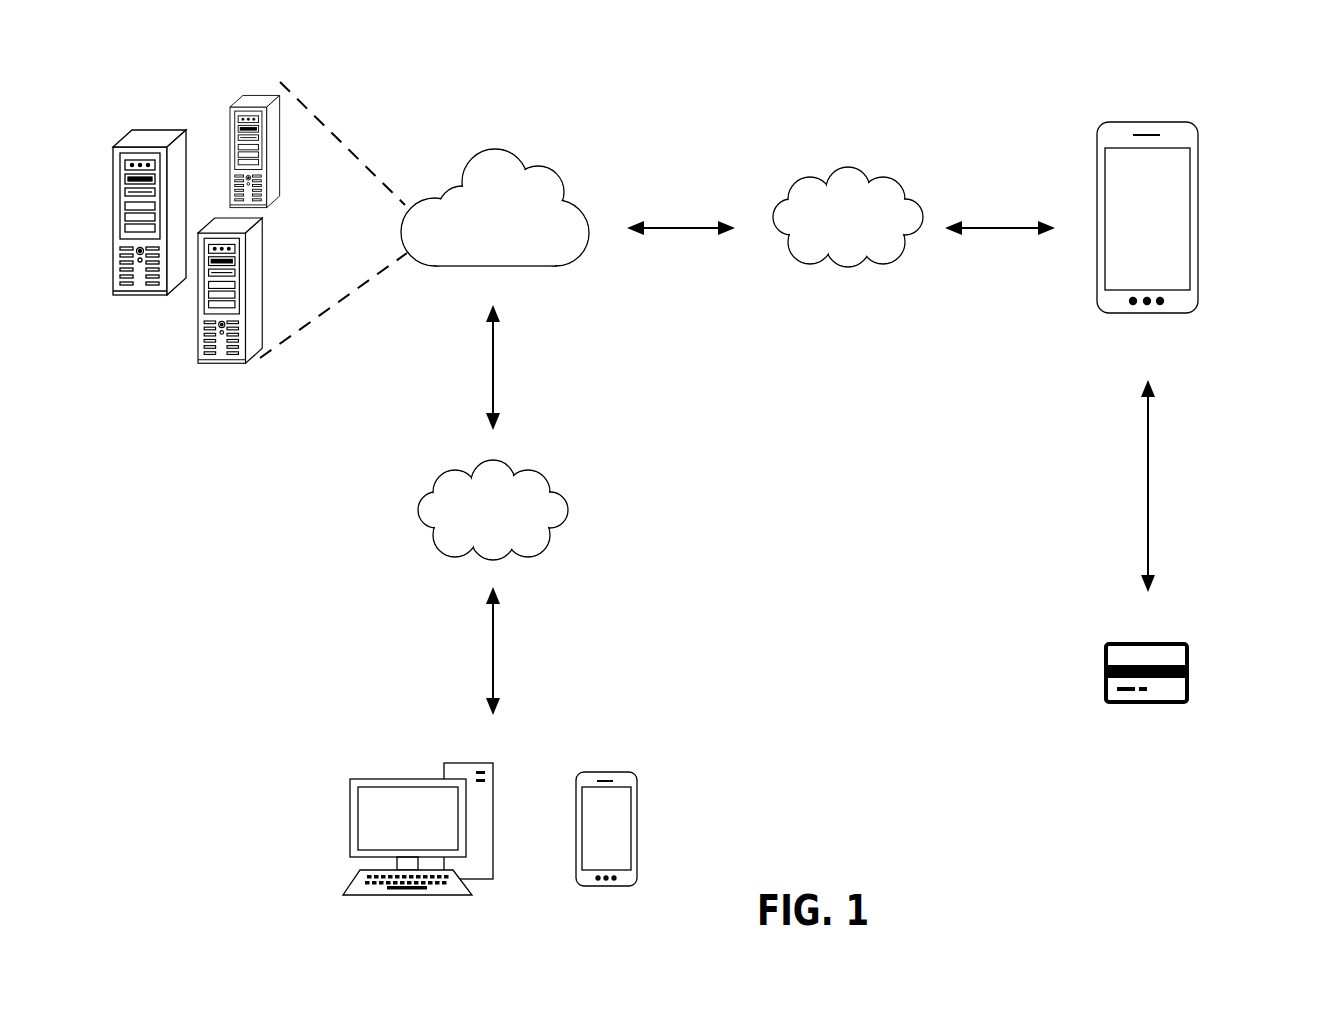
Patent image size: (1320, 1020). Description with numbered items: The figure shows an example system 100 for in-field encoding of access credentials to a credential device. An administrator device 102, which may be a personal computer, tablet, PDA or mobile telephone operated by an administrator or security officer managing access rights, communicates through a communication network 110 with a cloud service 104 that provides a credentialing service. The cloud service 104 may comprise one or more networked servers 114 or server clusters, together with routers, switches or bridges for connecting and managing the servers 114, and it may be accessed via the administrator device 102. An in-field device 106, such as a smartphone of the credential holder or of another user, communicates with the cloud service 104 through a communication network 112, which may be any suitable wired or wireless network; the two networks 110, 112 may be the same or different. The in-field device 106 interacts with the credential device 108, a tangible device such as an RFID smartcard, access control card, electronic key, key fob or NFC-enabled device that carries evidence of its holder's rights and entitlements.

The system 100 is at (970, 56).
The administrator device 102 is at (350, 828).
The cloud service 104 is at (548, 170).
The in-field device 106 is at (1198, 163).
The credential device 108 is at (1188, 648).
The communication network 110 is at (425, 527).
The communication network 112 is at (893, 183).
The networked servers 114 is at (198, 355).